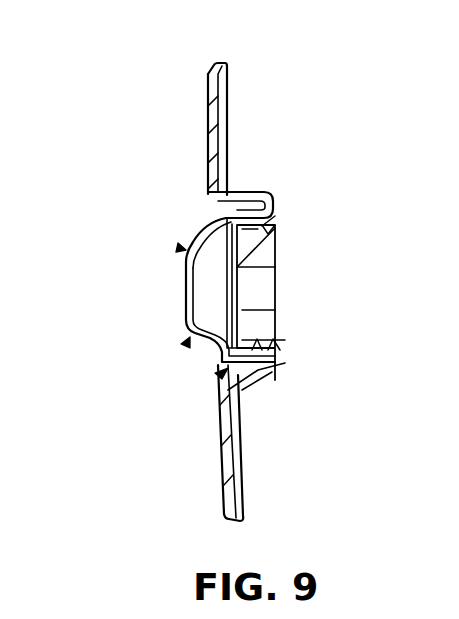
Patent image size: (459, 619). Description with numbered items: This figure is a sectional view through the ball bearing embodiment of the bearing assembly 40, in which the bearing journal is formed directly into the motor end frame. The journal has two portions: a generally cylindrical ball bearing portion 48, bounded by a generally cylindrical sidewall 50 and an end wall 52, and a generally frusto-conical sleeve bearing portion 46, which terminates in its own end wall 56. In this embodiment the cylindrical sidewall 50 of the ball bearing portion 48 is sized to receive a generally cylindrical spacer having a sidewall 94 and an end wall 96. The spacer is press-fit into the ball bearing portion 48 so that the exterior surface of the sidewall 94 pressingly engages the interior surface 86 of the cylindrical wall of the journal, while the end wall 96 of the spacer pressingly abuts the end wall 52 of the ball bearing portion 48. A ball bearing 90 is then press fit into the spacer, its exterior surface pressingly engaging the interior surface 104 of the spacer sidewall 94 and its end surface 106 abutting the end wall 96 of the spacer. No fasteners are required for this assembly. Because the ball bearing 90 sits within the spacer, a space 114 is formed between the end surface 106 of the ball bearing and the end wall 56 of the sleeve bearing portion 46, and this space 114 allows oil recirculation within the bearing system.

The bearing assembly 40 is at (184, 250).
The sleeve bearing portion 46 is at (188, 340).
The ball bearing portion 48 is at (222, 373).
The cylindrical sidewall 50 is at (260, 197).
The end wall 52 is at (206, 212).
The end wall 56 is at (186, 318).
The interior surface 86 is at (275, 372).
The ball bearing 90 is at (275, 243).
The sidewall 94 is at (280, 352).
The end wall 96 is at (272, 250).
The interior surface 104 is at (277, 337).
The end surface 106 is at (199, 226).
The space 114 is at (203, 285).